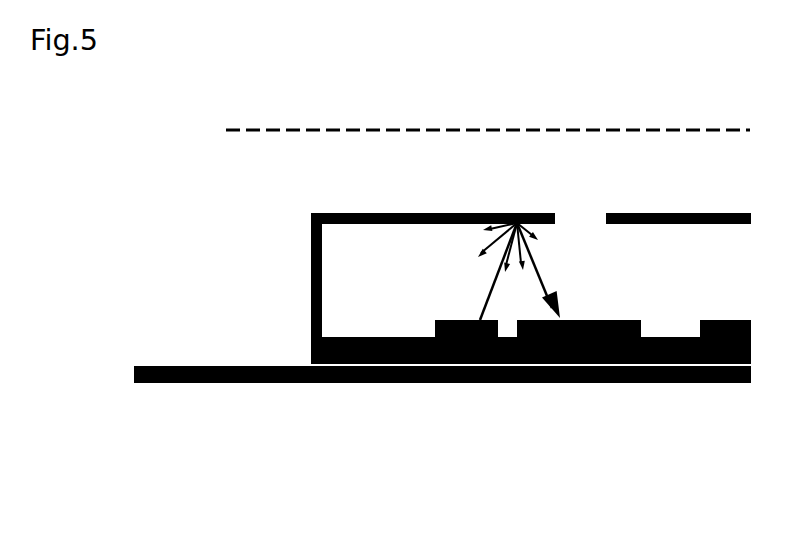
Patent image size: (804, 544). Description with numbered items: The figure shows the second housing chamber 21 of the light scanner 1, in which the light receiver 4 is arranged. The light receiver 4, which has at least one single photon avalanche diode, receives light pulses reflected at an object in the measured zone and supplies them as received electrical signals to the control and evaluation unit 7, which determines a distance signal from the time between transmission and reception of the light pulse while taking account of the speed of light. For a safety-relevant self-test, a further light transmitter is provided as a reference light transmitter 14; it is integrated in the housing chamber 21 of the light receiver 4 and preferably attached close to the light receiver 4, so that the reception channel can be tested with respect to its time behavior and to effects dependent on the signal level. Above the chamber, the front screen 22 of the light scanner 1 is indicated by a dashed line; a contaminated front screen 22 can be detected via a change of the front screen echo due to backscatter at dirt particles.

The light scanner 1 is at (548, 410).
The light receiver 4 is at (585, 318).
The control and evaluation unit 7 is at (715, 318).
The reference light transmitter 14 is at (450, 322).
The second housing chamber 21 is at (275, 265).
The front screen 22 is at (653, 130).